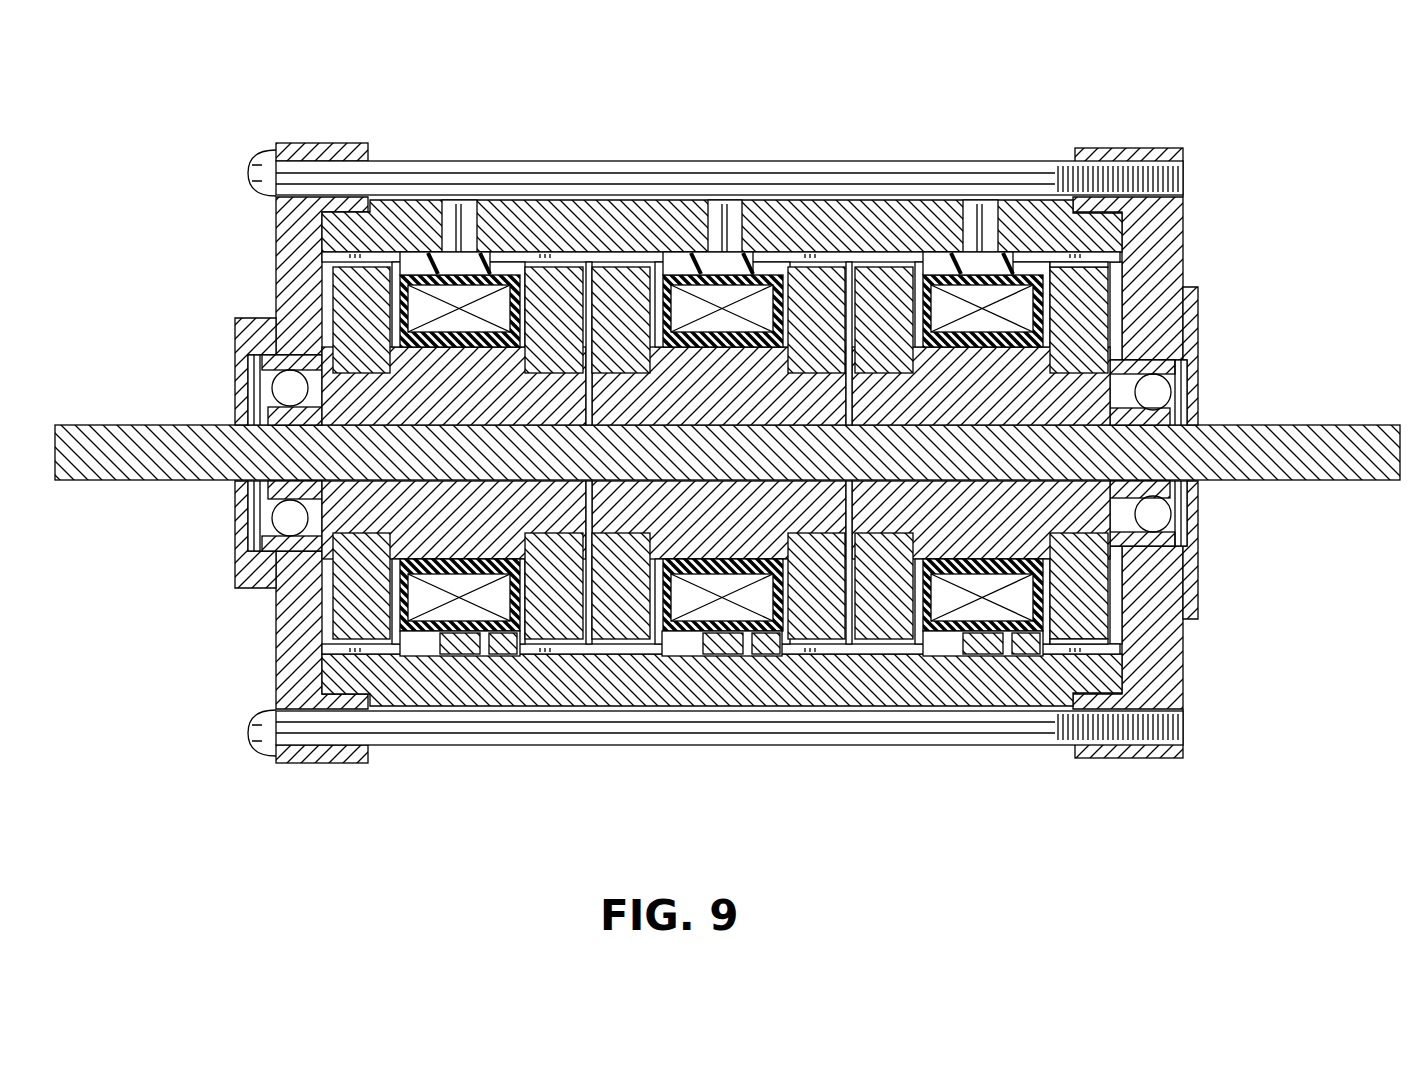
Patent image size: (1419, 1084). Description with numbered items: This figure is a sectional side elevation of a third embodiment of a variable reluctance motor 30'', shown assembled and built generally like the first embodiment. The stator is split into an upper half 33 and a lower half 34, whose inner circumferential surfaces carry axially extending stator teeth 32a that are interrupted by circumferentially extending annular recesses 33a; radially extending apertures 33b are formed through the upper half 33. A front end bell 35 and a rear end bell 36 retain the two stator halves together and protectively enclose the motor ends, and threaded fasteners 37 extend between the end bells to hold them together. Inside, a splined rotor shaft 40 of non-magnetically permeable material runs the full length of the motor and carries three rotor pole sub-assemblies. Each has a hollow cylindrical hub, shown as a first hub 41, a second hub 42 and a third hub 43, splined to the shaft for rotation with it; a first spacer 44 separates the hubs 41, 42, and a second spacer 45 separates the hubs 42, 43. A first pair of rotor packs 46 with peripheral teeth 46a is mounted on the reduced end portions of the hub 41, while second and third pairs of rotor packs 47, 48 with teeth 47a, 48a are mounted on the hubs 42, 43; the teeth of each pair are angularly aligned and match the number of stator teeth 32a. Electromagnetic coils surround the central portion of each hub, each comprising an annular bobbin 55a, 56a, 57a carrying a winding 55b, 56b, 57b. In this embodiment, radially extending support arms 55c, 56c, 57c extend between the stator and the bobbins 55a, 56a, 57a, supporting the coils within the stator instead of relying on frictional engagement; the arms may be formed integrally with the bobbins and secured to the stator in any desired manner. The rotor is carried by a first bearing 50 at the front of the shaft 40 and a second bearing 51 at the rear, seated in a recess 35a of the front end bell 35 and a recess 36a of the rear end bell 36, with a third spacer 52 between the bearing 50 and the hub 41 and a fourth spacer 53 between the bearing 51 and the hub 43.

The motor 30'' is at (727, 440).
The teeth 32a is at (340, 650).
The upper half of the stator 33 is at (1050, 215).
The annular recesses 33a is at (490, 256).
The apertures 33b is at (470, 232).
The lower half of the stator 34 is at (993, 705).
The front end bell 35 is at (290, 262).
The recess 35a is at (255, 362).
The rear end bell 36 is at (1170, 250).
The recess 36a is at (1195, 370).
The threaded fasteners 37 is at (855, 180).
The rotor shaft 40 is at (1358, 478).
The first hub 41 is at (430, 555).
The second hub 42 is at (690, 555).
The third hub 43 is at (955, 555).
The first spacer 44 is at (590, 430).
The second spacer 45 is at (850, 430).
The first rotor packs 46 is at (345, 603).
The teeth 46a is at (345, 628).
The second rotor packs 47 is at (648, 640).
The teeth 47a is at (618, 625).
The third rotor packs 48 is at (1105, 565).
The teeth 48a is at (1100, 640).
The first bearing 50 is at (252, 498).
The second bearing 51 is at (1188, 497).
The third spacer 52 is at (320, 405).
The fourth spacer 53 is at (1115, 430).
The bobbin 55a is at (455, 293).
The winding 55b is at (462, 265).
The support arm 55c is at (440, 642).
The bobbin 56a is at (720, 293).
The winding 56b is at (725, 268).
The support arm 56c is at (700, 642).
The bobbin 57a is at (978, 293).
The winding 57b is at (990, 268).
The support arm 57c is at (965, 645).